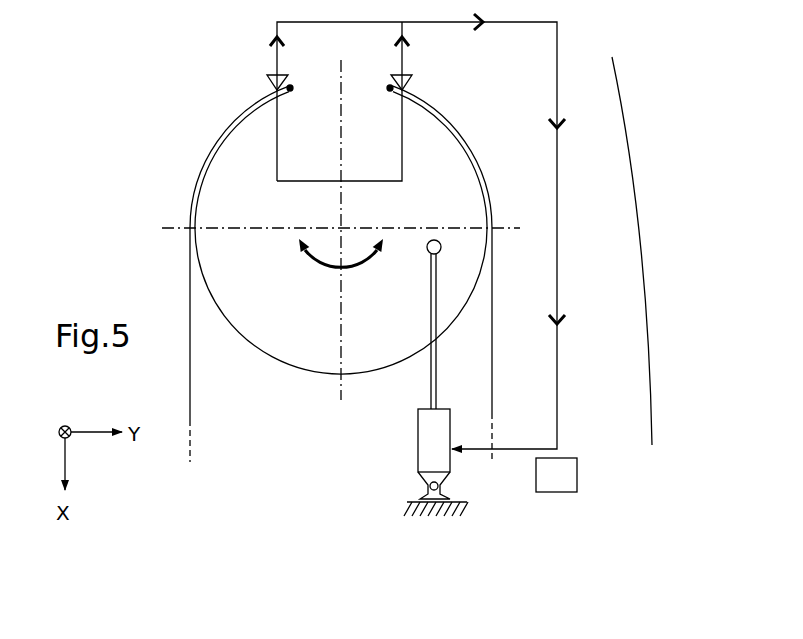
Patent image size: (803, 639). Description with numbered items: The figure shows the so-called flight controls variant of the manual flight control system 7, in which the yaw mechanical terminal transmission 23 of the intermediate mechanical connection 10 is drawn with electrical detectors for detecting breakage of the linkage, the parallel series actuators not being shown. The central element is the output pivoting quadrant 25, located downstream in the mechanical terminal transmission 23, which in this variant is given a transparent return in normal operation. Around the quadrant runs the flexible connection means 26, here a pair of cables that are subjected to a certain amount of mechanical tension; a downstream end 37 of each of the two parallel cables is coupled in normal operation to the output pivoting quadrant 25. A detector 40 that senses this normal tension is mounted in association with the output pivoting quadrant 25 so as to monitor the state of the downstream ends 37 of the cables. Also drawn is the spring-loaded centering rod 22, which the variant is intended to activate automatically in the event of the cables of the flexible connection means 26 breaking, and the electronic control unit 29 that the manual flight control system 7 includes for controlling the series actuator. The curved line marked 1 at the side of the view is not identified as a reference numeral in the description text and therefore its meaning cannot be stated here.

The machine frame 1 is at (628, 254).
The manual flight control system 7 is at (248, 233).
The intermediate mechanical connection 10 is at (248, 233).
The mechanical terminal transmission 23 is at (145, 199).
The spring-loaded centering rod 22 is at (407, 470).
The output pivoting quadrant 25 is at (318, 307).
The flexible connection means 26 is at (193, 438).
The electronic control unit 29 is at (569, 487).
The downstream end 37 is at (258, 84).
The detector 40 is at (267, 76).